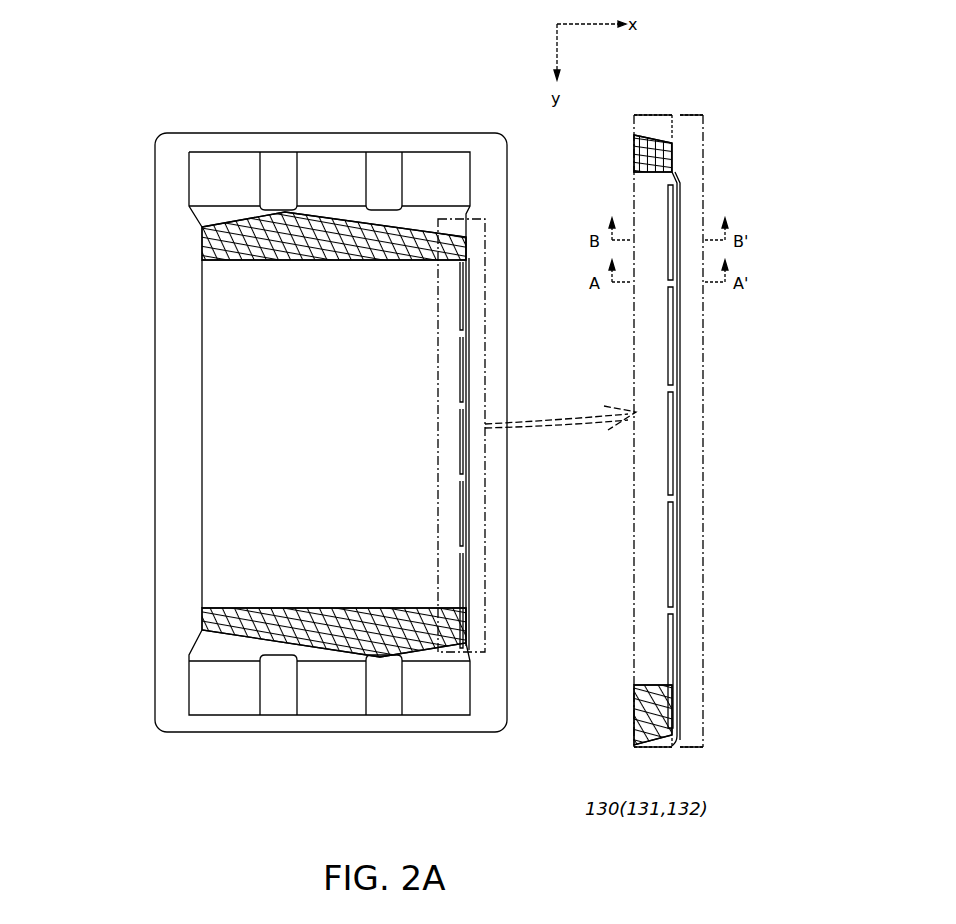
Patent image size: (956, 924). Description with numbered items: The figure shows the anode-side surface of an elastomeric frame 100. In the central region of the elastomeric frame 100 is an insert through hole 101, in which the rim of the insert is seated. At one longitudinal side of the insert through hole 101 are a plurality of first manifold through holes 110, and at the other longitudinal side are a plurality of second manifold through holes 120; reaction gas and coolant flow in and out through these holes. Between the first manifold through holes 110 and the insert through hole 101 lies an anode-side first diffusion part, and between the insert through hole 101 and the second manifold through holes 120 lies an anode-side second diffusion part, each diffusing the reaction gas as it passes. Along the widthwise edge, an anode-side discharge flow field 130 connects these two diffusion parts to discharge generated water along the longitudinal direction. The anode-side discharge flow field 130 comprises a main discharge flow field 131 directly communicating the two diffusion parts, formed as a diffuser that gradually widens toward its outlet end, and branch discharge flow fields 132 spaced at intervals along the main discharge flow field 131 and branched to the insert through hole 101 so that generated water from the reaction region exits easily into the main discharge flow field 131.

The elastomeric frame 100 is at (332, 124).
The first manifold through holes 110 is at (313, 170).
The second manifold through holes 120 is at (420, 690).
The insert through hole 101 is at (245, 363).
The anode-side discharge flow field 130 is at (478, 380).
The main discharge flow field 131 is at (680, 200).
The branch discharge flow field 132 is at (673, 283).